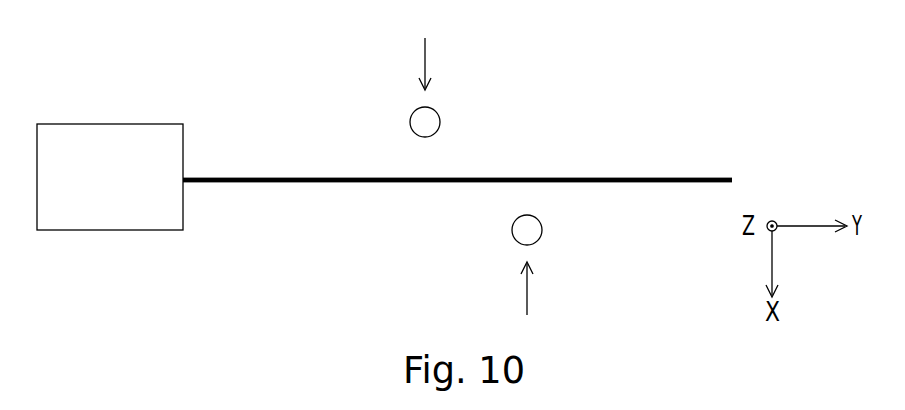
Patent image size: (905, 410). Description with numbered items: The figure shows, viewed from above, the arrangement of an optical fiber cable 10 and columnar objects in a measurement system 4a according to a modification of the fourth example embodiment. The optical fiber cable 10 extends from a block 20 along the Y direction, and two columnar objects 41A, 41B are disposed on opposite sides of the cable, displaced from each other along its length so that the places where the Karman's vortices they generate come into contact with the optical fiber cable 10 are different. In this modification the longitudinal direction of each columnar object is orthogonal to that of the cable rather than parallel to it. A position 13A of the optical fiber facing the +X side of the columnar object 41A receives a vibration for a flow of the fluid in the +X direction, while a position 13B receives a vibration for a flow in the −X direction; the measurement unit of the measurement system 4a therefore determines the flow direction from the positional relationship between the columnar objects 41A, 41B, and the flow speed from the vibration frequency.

The drive unit 20 is at (166, 124).
The optical fiber cable 10 is at (720, 177).
The position of optical fiber 13A is at (428, 182).
The position of optical fiber 13B is at (520, 178).
The columnar object 41A is at (410, 124).
The columnar object 41B is at (542, 233).
The measurement system 4a is at (462, 52).